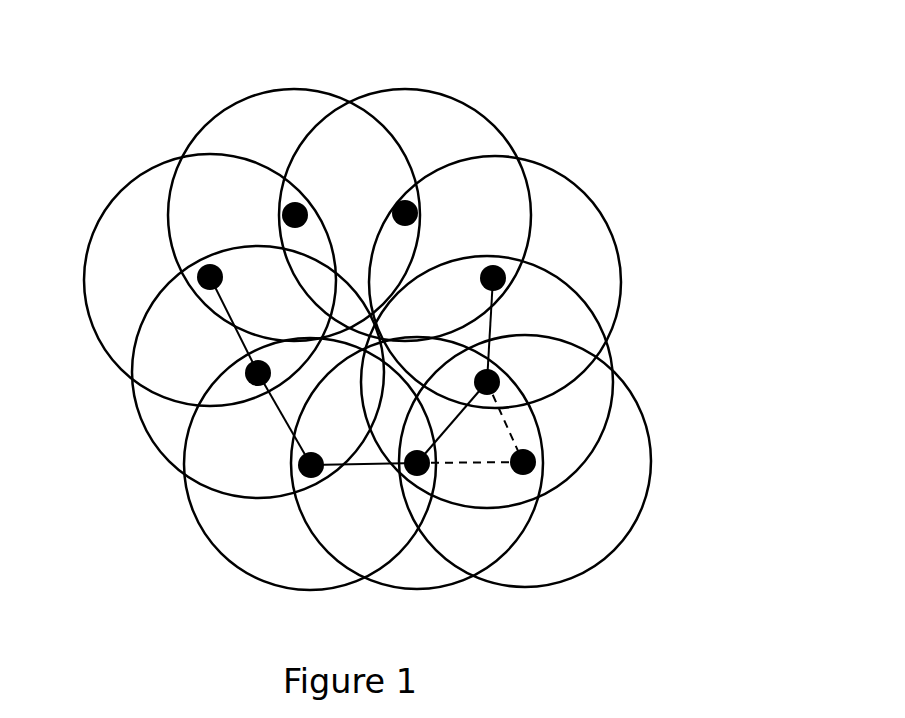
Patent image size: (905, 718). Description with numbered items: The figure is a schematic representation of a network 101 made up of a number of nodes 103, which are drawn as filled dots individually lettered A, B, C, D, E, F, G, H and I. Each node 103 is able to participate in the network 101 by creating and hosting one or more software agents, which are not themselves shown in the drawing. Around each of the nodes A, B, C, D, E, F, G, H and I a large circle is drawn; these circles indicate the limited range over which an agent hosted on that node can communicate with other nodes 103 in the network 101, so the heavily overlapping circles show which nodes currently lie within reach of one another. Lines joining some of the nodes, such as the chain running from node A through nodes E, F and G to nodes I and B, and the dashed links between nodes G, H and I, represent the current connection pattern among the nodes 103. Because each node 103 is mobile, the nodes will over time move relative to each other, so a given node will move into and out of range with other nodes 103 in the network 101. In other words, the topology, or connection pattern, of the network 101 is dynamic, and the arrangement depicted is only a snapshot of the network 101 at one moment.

The network 101 is at (399, 307).
The node 103 is at (282, 207).
The network node A is at (223, 277).
The network node B is at (481, 280).
The network node C is at (299, 227).
The network node D is at (405, 226).
The network node E is at (265, 369).
The network node F is at (316, 455).
The network node G is at (417, 451).
The network node H is at (512, 470).
The network node I is at (479, 382).